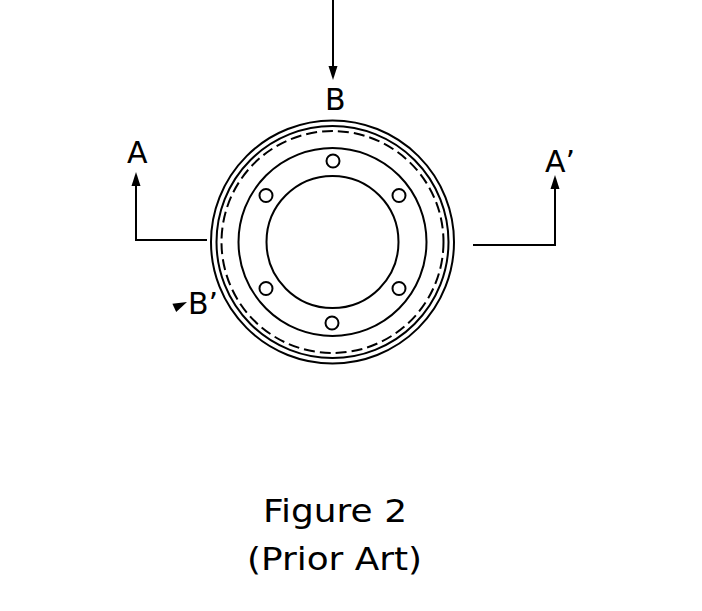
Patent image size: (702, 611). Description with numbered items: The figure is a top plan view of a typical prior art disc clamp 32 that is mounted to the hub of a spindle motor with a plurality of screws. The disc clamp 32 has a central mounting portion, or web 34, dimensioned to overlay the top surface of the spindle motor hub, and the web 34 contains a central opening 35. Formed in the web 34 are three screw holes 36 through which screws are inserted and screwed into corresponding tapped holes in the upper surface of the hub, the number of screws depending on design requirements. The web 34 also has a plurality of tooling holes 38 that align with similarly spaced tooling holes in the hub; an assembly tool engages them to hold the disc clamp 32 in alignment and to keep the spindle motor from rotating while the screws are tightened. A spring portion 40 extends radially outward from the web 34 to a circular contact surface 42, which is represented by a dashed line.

The disc clamp 32 is at (262, 106).
The web 34 is at (255, 222).
The central opening 35 is at (266, 257).
The screw holes 36 is at (337, 156).
The tooling holes 38 is at (262, 191).
The spring portion 40 is at (437, 218).
The contact surface 42 is at (443, 288).